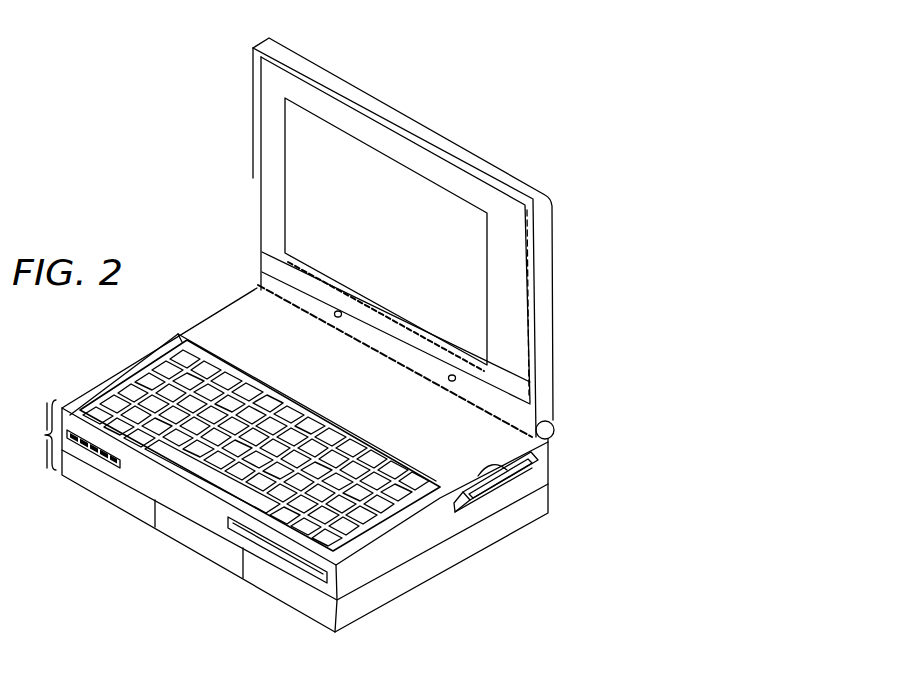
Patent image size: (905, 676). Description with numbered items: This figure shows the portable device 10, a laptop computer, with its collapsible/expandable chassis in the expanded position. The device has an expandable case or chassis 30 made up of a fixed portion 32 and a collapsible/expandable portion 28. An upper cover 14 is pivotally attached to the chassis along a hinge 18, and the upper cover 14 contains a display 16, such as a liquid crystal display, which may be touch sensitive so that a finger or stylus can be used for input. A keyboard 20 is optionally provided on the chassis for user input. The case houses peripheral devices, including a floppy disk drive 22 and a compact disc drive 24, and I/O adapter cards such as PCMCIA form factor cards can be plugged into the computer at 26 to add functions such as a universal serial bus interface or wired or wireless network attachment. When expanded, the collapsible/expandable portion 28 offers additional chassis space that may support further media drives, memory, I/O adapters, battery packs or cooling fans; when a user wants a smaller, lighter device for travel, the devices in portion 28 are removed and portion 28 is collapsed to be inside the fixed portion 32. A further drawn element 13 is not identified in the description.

The portable device 10 is at (158, 212).
The hinge cover 13 is at (257, 286).
The upper cover 14 is at (540, 307).
The display 16 is at (393, 177).
The hinge 18 is at (555, 431).
The keyboard 20 is at (131, 382).
The floppy disk drive 22 is at (90, 447).
The compact disc drive 24 is at (262, 547).
The adapter card plug-in location 26 is at (500, 481).
The collapsible/expandable portion 28 is at (422, 572).
The expandable case or chassis 30 is at (29, 435).
The fixed portion 32 is at (552, 463).